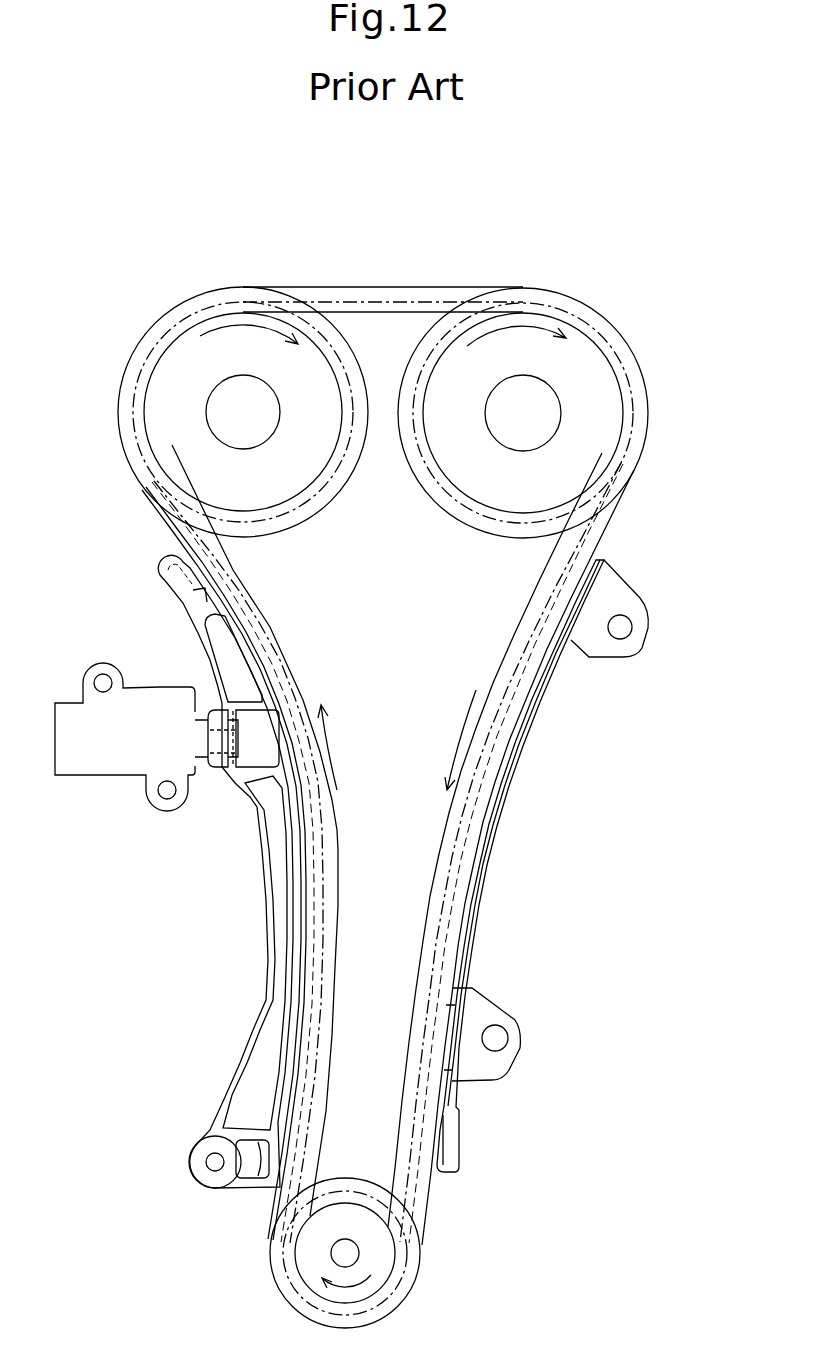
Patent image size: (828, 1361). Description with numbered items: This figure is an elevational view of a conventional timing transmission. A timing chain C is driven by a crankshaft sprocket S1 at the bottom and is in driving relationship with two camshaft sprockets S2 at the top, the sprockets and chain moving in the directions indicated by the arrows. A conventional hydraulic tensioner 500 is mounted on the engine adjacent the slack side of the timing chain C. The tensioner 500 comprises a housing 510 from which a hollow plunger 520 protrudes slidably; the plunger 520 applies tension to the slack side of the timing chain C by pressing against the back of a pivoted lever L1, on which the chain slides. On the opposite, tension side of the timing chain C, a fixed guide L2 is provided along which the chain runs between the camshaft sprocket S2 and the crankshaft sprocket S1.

The timing chain C is at (399, 288).
The crankshaft sprocket S1 is at (458, 1262).
The camshaft sprockets S2 is at (313, 548).
The pivoted lever L1 is at (262, 968).
The fixed guide L2 is at (532, 882).
The hydraulic tensioner 500 is at (146, 793).
The housing 510 is at (103, 768).
The plunger 520 is at (201, 772).